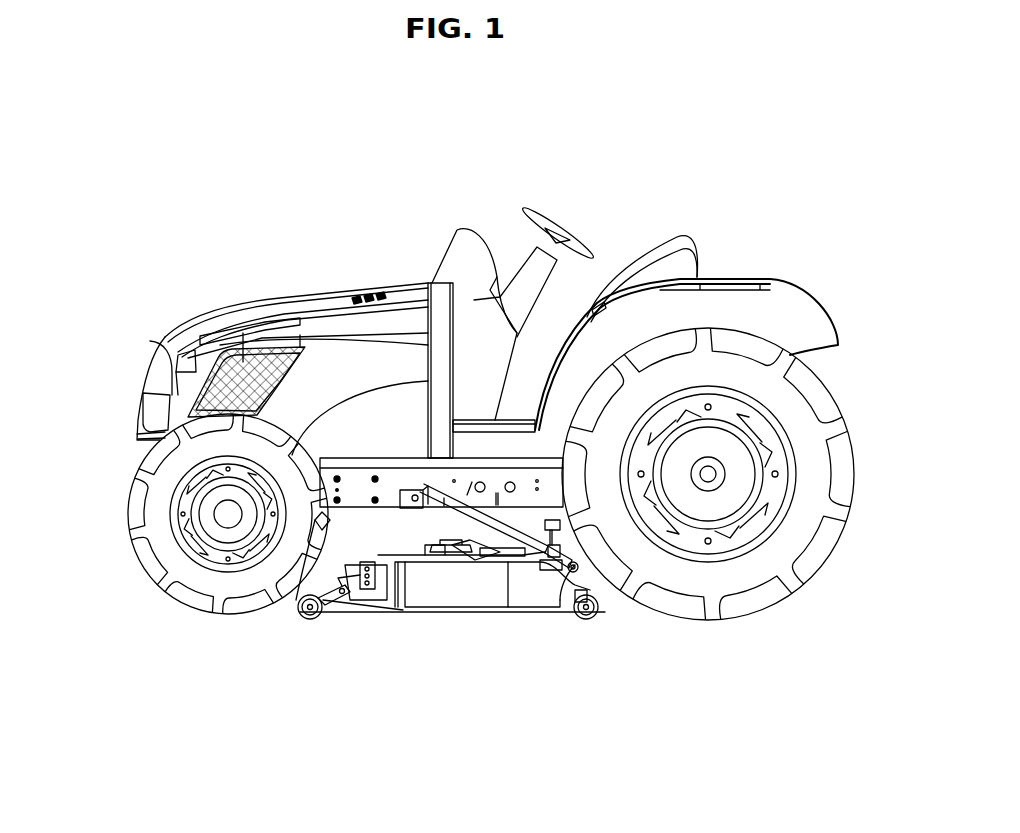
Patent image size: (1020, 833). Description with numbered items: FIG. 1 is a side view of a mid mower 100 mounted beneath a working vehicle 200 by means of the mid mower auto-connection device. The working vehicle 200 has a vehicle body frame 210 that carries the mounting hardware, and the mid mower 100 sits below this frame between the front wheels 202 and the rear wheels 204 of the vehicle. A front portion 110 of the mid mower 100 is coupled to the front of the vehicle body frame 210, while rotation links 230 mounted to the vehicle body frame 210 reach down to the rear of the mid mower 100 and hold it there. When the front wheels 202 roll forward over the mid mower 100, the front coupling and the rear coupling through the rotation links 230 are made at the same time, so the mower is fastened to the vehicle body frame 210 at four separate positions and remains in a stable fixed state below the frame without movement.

The tractor 200 is at (460, 430).
The frame rail 210 is at (367, 480).
The front wheel 202 is at (175, 553).
The rear wheel 204 is at (748, 575).
The mower deck 100 is at (429, 645).
The front caster assembly 110 is at (303, 585).
The deck housing 230 is at (510, 552).